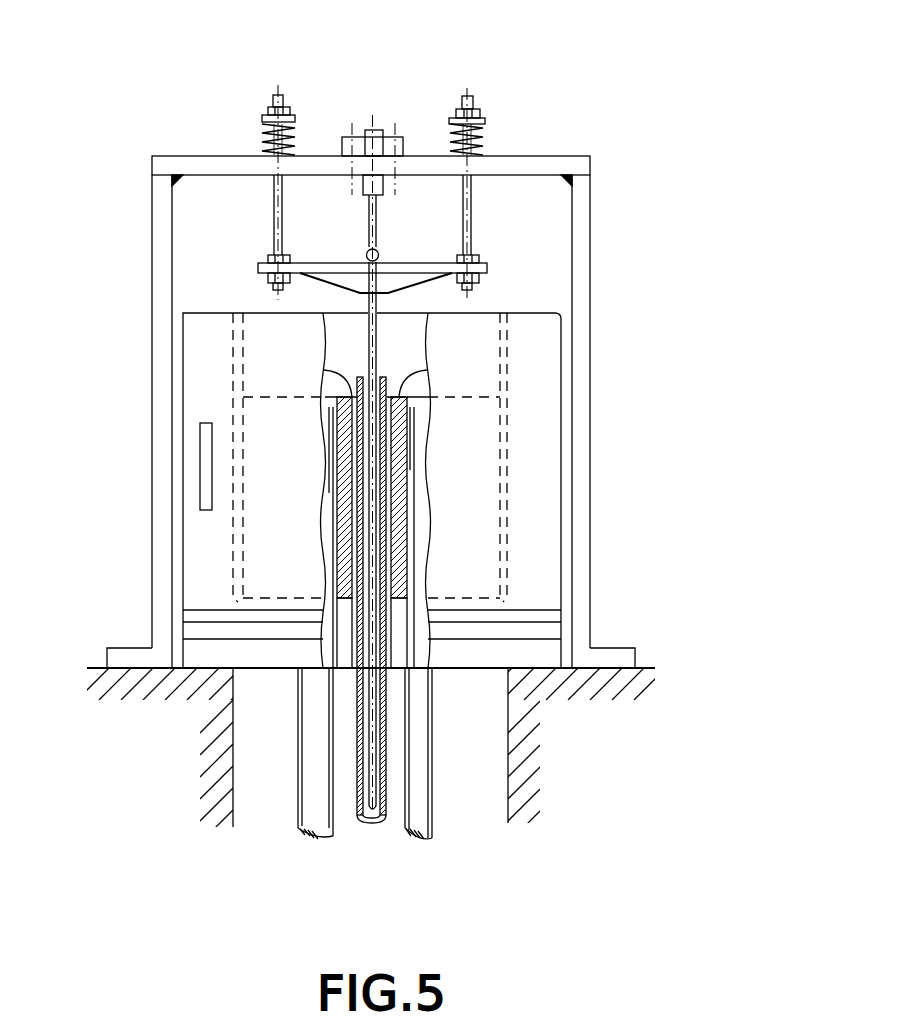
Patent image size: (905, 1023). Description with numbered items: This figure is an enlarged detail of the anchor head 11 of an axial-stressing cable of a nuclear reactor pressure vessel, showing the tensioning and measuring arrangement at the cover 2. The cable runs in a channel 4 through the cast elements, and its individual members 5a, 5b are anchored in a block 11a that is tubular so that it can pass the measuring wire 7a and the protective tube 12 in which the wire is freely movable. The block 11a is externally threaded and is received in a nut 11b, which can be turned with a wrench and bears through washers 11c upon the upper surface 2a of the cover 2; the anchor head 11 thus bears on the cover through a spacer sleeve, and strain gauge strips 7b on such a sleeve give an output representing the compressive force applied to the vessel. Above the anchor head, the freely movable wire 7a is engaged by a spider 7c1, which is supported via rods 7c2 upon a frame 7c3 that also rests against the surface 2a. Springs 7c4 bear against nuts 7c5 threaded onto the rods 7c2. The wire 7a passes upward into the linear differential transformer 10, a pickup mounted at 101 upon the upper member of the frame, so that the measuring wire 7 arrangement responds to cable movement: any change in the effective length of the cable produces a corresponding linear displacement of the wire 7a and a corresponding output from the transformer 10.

The cover member 2 is at (587, 760).
The upper surface of the cover 2a is at (648, 667).
The channel 4 is at (480, 760).
The individual cable member 5a is at (305, 806).
The individual cable member 5b is at (430, 805).
The operating rod 7 is at (379, 132).
The measuring wire 7a is at (377, 333).
The strain gauge strip 7b is at (205, 476).
The spider 7c1 is at (417, 268).
The rod 7c2 is at (503, 205).
The frame 7c3 is at (571, 156).
The spring 7c4 is at (480, 135).
The nut 7c5 is at (470, 106).
The linear differential transformer 10 is at (352, 110).
The mounting of the transformer 101 is at (351, 152).
The anchor head 11 is at (466, 485).
The block 11a is at (402, 530).
The nut 11b is at (537, 400).
The washer 11c is at (548, 630).
The protective tube 12 is at (357, 800).